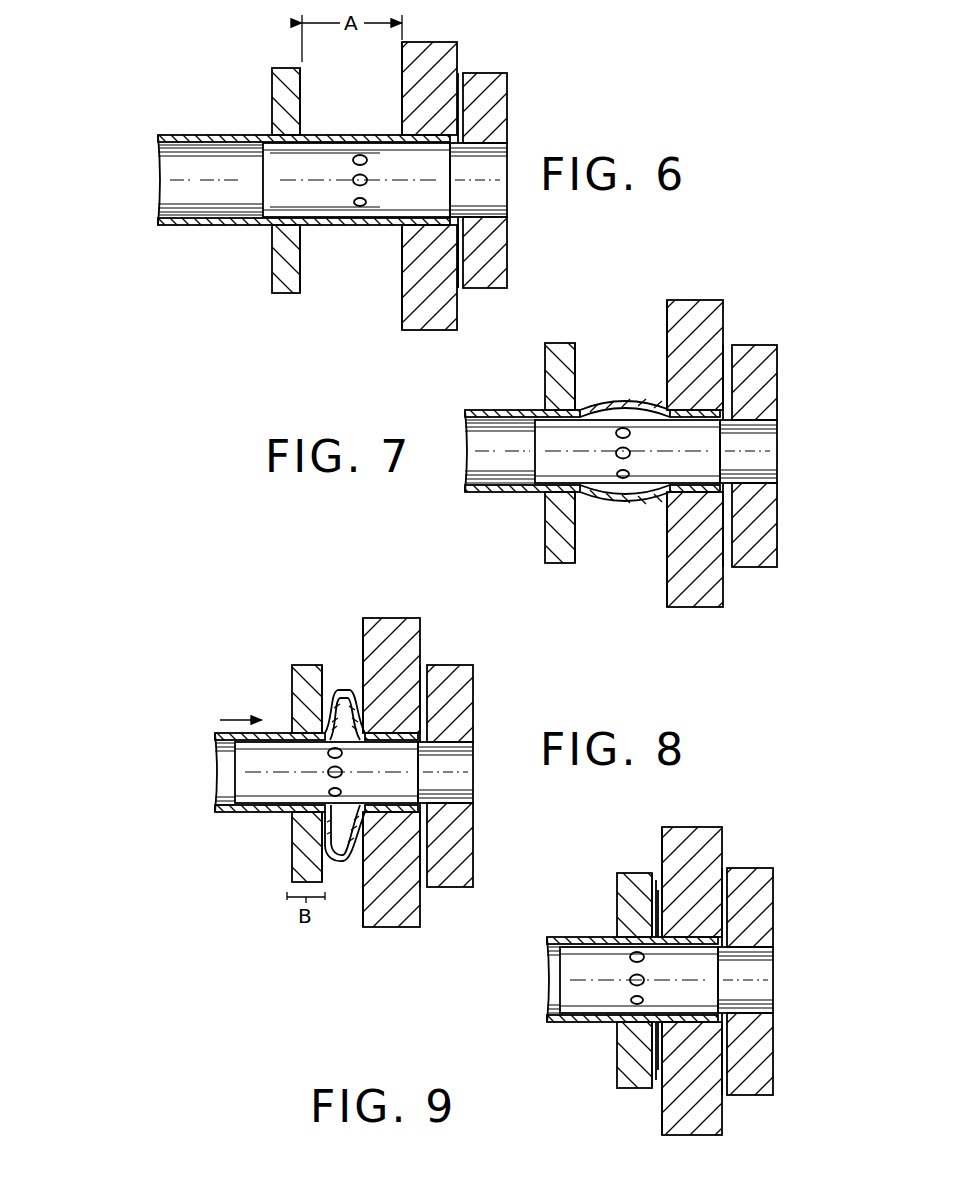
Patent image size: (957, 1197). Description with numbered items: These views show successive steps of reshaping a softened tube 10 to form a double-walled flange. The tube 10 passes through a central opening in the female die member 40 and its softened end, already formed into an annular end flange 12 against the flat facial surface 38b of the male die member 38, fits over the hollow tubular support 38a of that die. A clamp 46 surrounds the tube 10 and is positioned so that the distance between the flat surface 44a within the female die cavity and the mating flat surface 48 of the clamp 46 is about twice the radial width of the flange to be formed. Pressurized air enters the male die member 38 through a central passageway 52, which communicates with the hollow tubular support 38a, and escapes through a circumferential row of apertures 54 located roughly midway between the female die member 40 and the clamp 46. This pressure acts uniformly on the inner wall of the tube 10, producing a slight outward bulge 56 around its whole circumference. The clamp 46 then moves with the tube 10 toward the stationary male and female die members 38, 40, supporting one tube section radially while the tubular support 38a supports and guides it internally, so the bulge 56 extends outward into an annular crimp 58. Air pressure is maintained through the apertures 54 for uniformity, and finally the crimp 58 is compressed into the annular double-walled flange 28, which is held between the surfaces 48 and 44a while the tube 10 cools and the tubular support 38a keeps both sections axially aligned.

In FIG. 6, the softened tube 10 is at (220, 226).
In FIG. 7, the softened tube 10 is at (506, 493).
In FIG. 8, the softened tube 10 is at (261, 813).
In FIG. 9, the softened tube 10 is at (572, 937).
In FIG. 6, the annular end flange 12 is at (462, 112).
In FIG. 7, the annular end flange 12 is at (726, 372).
In FIG. 8, the annular end flange 12 is at (432, 690).
In FIG. 9, the annular end flange 12 is at (728, 905).
In FIG. 9, the annular double-walled flange 28 is at (657, 1088).
In FIG. 6, the male die member 38 is at (508, 118).
In FIG. 7, the male die member 38 is at (778, 356).
In FIG. 8, the male die member 38 is at (474, 682).
In FIG. 9, the male die member 38 is at (773, 906).
In FIG. 6, the hollow tubular support 38a is at (276, 172).
In FIG. 7, the hollow tubular support 38a is at (545, 450).
In FIG. 8, the hollow tubular support 38a is at (246, 775).
In FIG. 9, the hollow tubular support 38a is at (556, 968).
In FIG. 6, the flat facial surface 38b is at (461, 284).
In FIG. 7, the flat facial surface 38b is at (728, 560).
In FIG. 8, the flat facial surface 38b is at (428, 887).
In FIG. 9, the flat facial surface 38b is at (725, 1095).
In FIG. 6, the female die member 40 is at (458, 66).
In FIG. 7, the female die member 40 is at (700, 302).
In FIG. 8, the female die member 40 is at (392, 620).
In FIG. 9, the female die member 40 is at (705, 830).
In FIG. 6, the flat surface within female cavity 44a is at (402, 92).
In FIG. 7, the flat surface within female cavity 44a is at (667, 388).
In FIG. 8, the flat surface within female cavity 44a is at (363, 652).
In FIG. 9, the flat surface within female cavity 44a is at (662, 846).
In FIG. 6, the clamp 46 is at (272, 97).
In FIG. 7, the clamp 46 is at (545, 362).
In FIG. 8, the clamp 46 is at (292, 700).
In FIG. 9, the clamp 46 is at (617, 912).
In FIG. 6, the mating flat surface 48 is at (300, 96).
In FIG. 7, the mating flat surface 48 is at (577, 356).
In FIG. 8, the mating flat surface 48 is at (324, 680).
In FIG. 9, the mating flat surface 48 is at (655, 878).
In FIG. 6, the central passageway 52 is at (500, 198).
In FIG. 7, the central passageway 52 is at (775, 456).
In FIG. 8, the central passageway 52 is at (470, 783).
In FIG. 9, the central passageway 52 is at (771, 991).
In FIG. 6, the apertures 54 is at (360, 207).
In FIG. 7, the apertures 54 is at (623, 478).
In FIG. 8, the apertures 54 is at (328, 772).
In FIG. 9, the apertures 54 is at (634, 985).
In FIG. 7, the bulge 56 is at (612, 403).
In FIG. 8, the annular crimp 58 is at (343, 863).